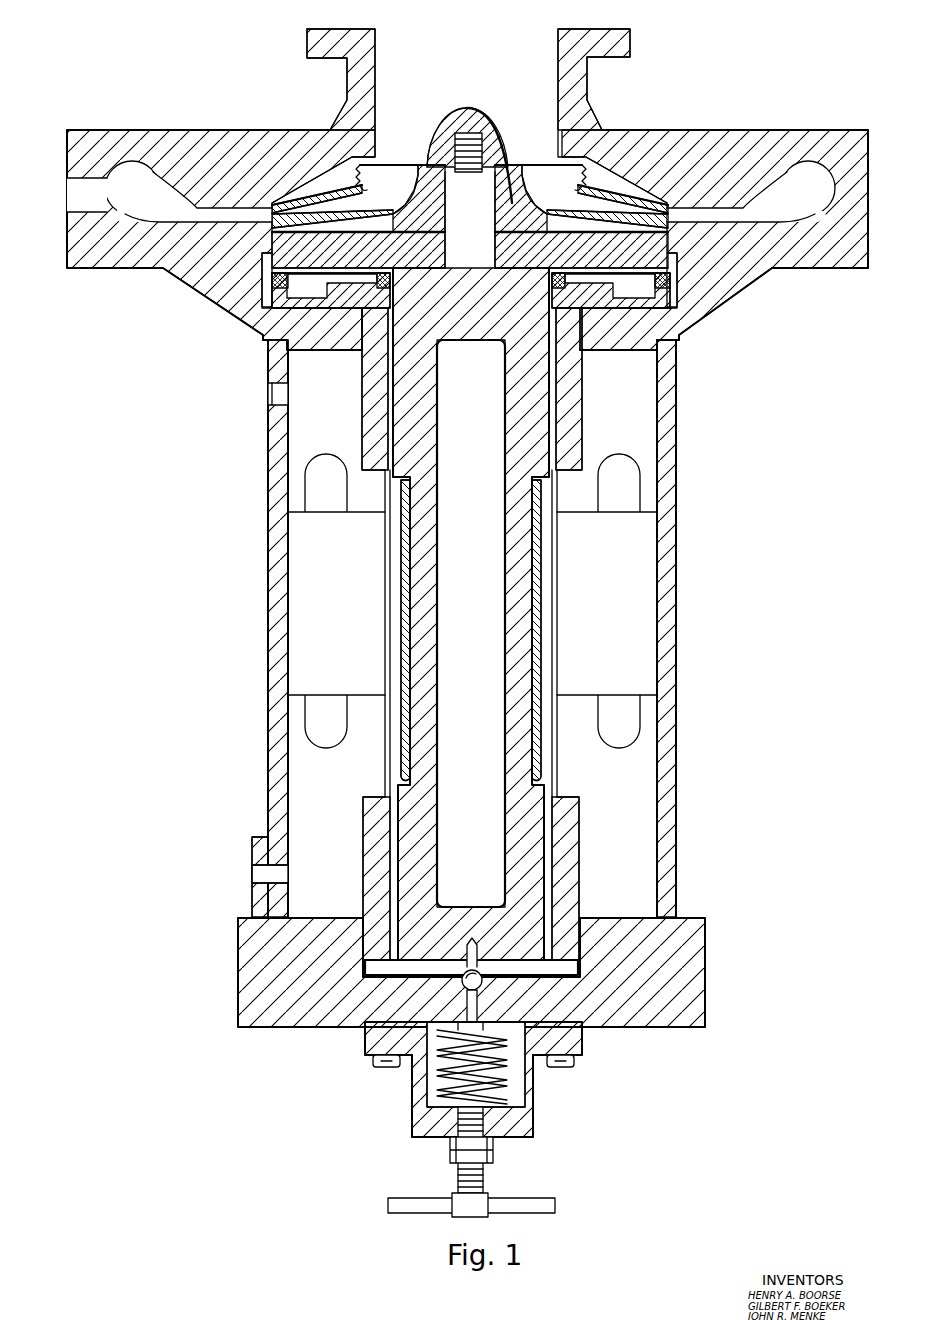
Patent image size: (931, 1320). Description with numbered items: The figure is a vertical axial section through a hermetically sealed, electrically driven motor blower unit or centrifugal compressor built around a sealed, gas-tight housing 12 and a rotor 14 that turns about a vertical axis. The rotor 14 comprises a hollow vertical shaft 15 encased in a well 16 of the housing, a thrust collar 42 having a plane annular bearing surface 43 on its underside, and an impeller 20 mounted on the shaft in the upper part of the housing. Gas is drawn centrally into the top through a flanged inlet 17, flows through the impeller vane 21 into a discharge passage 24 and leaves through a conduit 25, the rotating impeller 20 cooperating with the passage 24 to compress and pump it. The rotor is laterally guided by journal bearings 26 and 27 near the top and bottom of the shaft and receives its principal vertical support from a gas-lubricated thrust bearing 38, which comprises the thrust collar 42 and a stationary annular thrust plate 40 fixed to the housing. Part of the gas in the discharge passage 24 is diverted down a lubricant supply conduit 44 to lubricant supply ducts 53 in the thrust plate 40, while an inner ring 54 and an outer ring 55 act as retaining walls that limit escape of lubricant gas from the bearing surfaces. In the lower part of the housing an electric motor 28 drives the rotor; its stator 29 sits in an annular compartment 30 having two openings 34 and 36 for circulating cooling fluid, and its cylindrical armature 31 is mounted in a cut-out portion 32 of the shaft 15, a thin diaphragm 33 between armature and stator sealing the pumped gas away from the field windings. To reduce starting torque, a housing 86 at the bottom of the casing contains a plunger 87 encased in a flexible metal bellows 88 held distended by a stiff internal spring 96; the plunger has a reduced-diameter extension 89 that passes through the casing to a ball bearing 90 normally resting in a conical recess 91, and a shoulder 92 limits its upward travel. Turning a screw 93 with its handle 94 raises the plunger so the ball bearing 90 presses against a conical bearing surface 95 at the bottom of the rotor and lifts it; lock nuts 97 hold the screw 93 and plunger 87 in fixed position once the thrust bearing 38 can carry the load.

The housing 12 is at (772, 280).
The rotor 14 is at (453, 247).
The hollow vertical shaft 15 is at (548, 380).
The well 16 is at (546, 785).
The flanged inlet 17 is at (383, 52).
The impeller 20 is at (523, 167).
The impeller vane 21 is at (370, 203).
The discharge passage 24 is at (190, 217).
The conduit 25 is at (78, 188).
The journal bearing 26 is at (402, 337).
The journal bearing 27 is at (383, 873).
The electric motor 28 is at (643, 537).
The stator 29 is at (622, 592).
The annular compartment 30 is at (295, 752).
The cylindrical armature 31 is at (403, 510).
The cut-out portion 32 is at (403, 477).
The diaphragm 33 is at (388, 747).
The opening 34 is at (273, 393).
The opening 36 is at (255, 870).
The thrust bearing 38 is at (402, 273).
The thrust plate 40 is at (627, 292).
The thrust collar 42 is at (290, 247).
The bearing surface 43 is at (268, 285).
The lubricant supply conduit 44 is at (258, 293).
The lubricant supply duct 53 is at (336, 431).
The inner ring 54 is at (552, 291).
The outer ring 55 is at (672, 280).
The housing 86 is at (583, 1037).
The plunger 87 is at (578, 992).
The bellows 88 is at (510, 1062).
The extension 89 is at (467, 986).
The ball bearing 90 is at (462, 976).
The conical recess 91 is at (480, 978).
The shoulder 92 is at (529, 1007).
The screw 93 is at (507, 1137).
The handle 94 is at (557, 1205).
The conical bearing surface 95 is at (476, 960).
The internal spring 96 is at (505, 1105).
The lock nuts 97 is at (452, 1152).